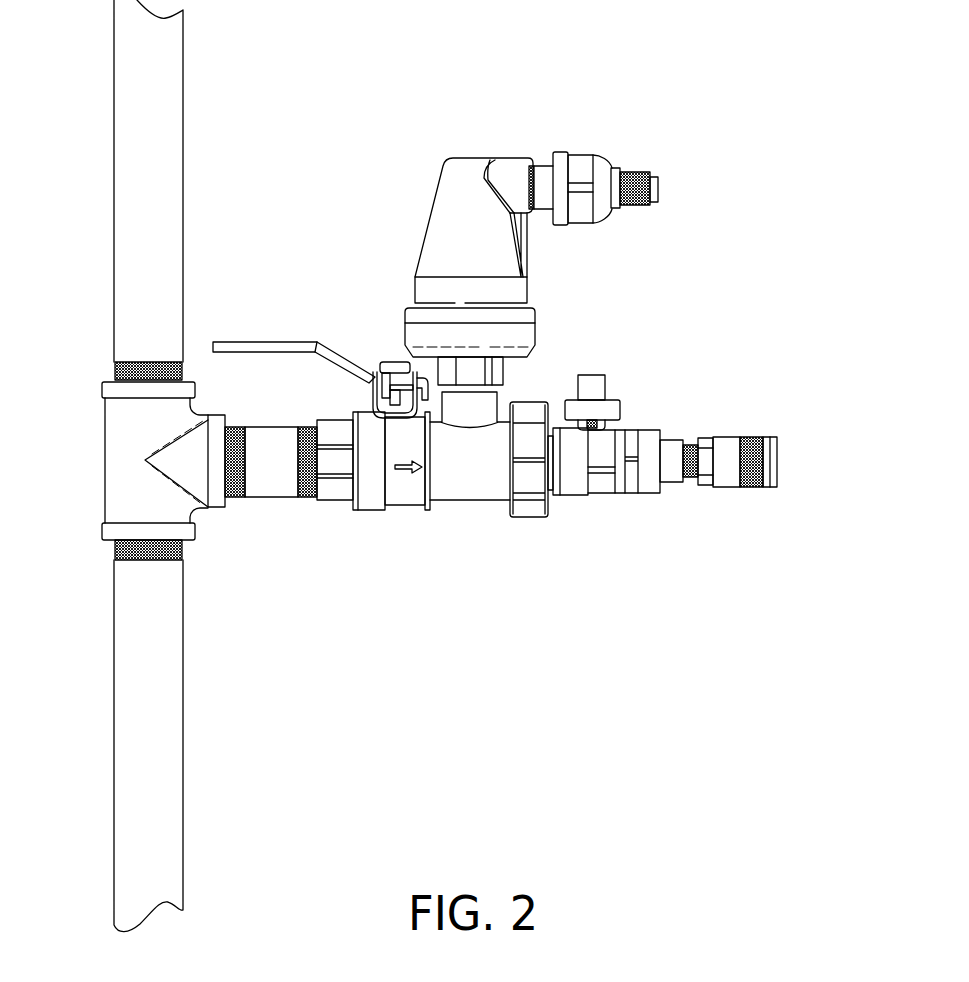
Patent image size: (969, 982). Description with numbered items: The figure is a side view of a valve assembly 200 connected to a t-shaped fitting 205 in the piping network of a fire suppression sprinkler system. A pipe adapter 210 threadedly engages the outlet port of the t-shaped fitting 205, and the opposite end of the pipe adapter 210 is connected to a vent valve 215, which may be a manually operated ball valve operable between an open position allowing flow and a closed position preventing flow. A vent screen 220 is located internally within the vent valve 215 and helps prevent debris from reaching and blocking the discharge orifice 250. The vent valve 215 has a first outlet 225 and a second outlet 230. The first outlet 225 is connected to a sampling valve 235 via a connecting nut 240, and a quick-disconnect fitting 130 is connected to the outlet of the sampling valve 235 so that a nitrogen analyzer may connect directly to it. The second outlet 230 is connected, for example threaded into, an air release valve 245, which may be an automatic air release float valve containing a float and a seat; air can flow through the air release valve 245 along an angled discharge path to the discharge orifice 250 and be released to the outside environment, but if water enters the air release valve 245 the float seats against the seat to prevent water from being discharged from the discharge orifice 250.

The quick-disconnect fitting 130 is at (777, 477).
The valve assembly 200 is at (377, 154).
The t-shaped fitting 205 is at (105, 462).
The pipe adapter 210 is at (270, 498).
The vent valve 215 is at (400, 510).
The vent screen 220 is at (452, 502).
The first outlet 225 is at (516, 406).
The second outlet 230 is at (510, 420).
The sampling valve 235 is at (620, 408).
The connecting nut 240 is at (530, 517).
The air release valve 245 is at (417, 268).
The discharge orifice 250 is at (628, 170).